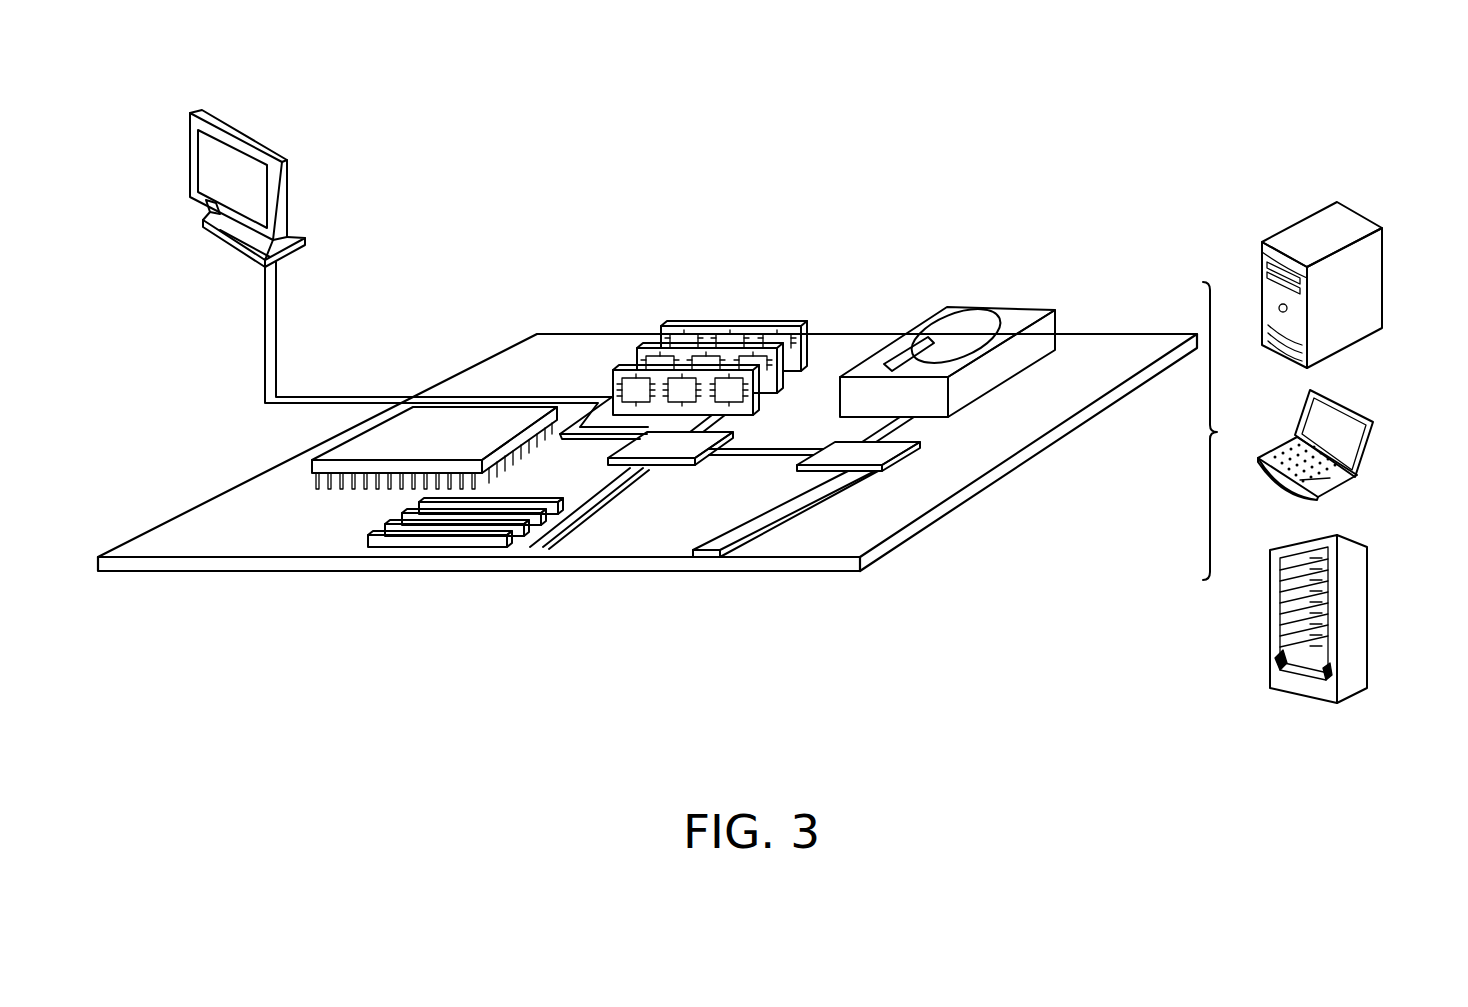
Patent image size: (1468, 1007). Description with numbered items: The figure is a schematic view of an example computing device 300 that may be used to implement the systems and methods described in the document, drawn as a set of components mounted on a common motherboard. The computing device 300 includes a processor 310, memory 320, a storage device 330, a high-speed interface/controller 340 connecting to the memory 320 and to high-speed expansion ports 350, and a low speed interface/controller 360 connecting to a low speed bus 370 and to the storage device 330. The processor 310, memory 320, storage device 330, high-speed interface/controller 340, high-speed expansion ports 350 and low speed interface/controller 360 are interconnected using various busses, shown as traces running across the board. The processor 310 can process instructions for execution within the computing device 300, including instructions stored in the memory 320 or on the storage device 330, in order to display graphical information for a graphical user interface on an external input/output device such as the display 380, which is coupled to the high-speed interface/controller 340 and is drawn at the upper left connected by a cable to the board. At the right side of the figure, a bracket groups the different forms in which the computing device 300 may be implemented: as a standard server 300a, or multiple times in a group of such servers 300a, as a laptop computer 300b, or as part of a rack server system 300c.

The computing device 300 is at (1021, 86).
The standard server 300a is at (1293, 222).
The laptop computer 300b is at (1353, 408).
The rack server system 300c is at (1358, 595).
The processor 310 is at (308, 462).
The memory 320 is at (733, 328).
The storage device 330 is at (998, 306).
The high-speed interface/controller 340 is at (675, 466).
The high-speed expansion ports 350 is at (376, 535).
The low speed interface/controller 360 is at (847, 450).
The low speed bus 370 is at (727, 563).
The display 380 is at (190, 155).